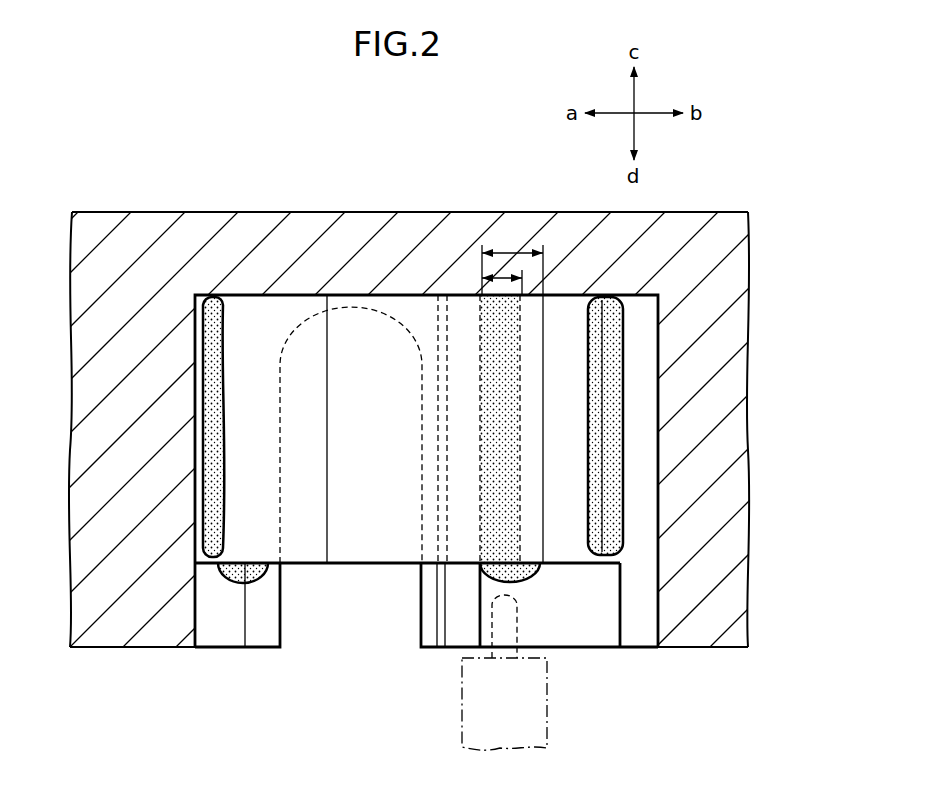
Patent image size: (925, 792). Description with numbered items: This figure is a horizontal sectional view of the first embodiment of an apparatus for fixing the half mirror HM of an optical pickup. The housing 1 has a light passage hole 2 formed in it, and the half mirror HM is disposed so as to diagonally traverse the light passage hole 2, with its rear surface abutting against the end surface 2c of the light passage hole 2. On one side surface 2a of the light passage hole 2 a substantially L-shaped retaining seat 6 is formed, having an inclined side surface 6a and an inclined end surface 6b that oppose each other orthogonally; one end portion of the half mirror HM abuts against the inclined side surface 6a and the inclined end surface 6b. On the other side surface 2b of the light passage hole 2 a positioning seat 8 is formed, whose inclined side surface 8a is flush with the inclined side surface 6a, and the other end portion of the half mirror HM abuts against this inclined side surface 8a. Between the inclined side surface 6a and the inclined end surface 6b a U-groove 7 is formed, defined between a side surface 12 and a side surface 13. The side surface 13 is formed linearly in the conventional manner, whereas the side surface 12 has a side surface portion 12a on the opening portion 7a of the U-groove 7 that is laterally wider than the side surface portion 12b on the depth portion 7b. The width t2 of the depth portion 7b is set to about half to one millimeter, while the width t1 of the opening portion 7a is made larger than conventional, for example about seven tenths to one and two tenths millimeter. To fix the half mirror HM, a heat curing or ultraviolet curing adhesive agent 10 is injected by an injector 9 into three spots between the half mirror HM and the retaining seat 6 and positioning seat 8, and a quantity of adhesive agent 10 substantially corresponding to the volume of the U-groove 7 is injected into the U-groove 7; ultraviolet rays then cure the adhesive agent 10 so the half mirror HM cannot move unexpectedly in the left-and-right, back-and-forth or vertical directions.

The housing 1 is at (680, 233).
The light passage hole 2 is at (347, 624).
The one side surface of the light passage hole 2a is at (656, 584).
The other side surface of the light passage hole 2b is at (193, 430).
The end surface of the light passage hole 2c is at (320, 297).
The retaining seat 6 is at (567, 630).
The inclined side surface of the retaining seat 6a is at (462, 620).
The inclined end surface of the retaining seat 6b is at (587, 620).
The U-groove 7 is at (368, 402).
The opening portion of the U-groove 7a is at (520, 498).
The depth portion of the U-groove 7b is at (495, 398).
The positioning seat 8 is at (222, 624).
The inclined side surface of the positioning seat 8a is at (265, 622).
The injector 9 is at (473, 728).
The adhesive agent 10 is at (213, 530).
The side surface 12 is at (812, 412).
The side surface portion on the opening portion 12a is at (535, 527).
The side surface portion on the depth portion 12b is at (513, 412).
The side surface 13 is at (490, 336).
The half mirror HM is at (256, 284).
The width of the opening portion t1 is at (510, 256).
The width of the depth portion t2 is at (497, 277).